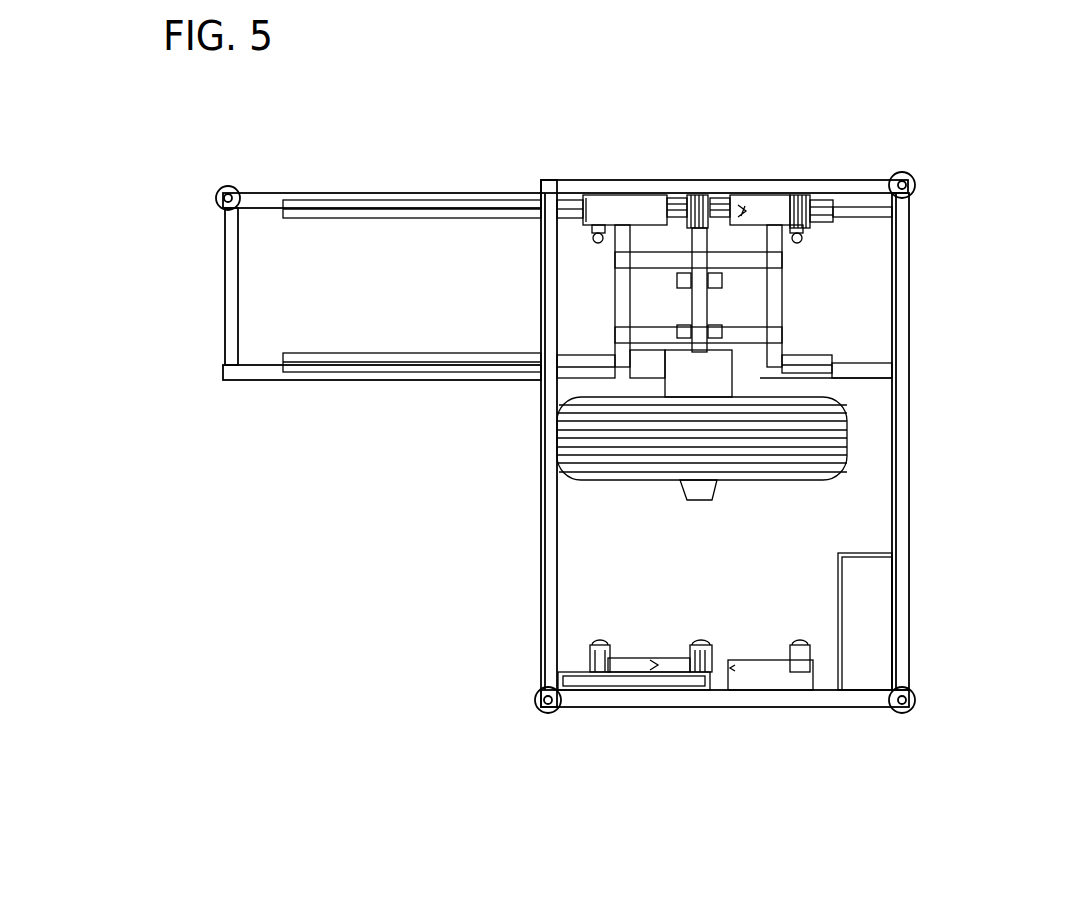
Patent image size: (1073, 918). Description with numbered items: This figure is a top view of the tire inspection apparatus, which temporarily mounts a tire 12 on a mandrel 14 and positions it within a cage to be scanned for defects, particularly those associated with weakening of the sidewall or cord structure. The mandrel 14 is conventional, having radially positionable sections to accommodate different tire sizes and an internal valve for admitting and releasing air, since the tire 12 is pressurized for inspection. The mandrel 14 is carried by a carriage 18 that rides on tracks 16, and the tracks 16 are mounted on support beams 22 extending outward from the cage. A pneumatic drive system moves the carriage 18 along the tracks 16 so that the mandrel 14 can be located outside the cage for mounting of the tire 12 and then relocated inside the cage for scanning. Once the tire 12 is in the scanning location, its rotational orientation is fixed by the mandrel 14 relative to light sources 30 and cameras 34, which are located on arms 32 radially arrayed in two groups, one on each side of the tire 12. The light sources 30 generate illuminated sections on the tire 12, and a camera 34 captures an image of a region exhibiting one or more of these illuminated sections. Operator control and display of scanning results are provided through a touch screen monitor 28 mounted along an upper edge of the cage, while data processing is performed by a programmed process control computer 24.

The tire 12 is at (563, 442).
The mandrel 14 is at (680, 483).
The tracks 16 is at (423, 207).
The carriage 18 is at (777, 303).
The support beams 22 is at (253, 380).
The process control computer 24 is at (872, 568).
The touch screen monitor 28 is at (583, 682).
The light sources 30 is at (745, 228).
The arms 32 is at (765, 677).
The cameras 34 is at (827, 195).